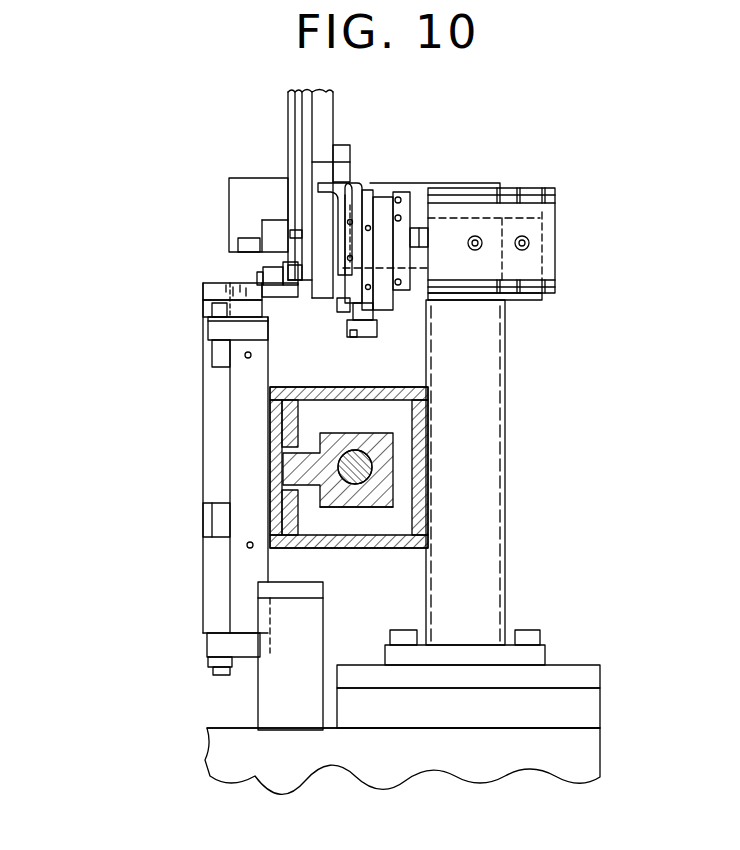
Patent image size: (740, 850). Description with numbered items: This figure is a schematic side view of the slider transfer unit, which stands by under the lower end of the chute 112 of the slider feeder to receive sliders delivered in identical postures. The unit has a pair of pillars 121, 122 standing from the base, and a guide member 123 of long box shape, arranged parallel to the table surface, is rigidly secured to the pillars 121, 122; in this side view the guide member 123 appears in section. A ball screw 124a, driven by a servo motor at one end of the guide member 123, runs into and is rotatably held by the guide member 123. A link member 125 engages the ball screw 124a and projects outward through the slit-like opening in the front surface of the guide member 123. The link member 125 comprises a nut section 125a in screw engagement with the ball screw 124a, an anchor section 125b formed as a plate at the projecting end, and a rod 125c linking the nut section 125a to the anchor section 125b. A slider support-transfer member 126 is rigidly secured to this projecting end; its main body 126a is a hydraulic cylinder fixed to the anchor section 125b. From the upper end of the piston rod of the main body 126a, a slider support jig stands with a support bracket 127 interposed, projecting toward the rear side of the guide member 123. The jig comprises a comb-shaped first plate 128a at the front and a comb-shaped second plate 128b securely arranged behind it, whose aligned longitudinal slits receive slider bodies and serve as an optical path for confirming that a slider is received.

The chute 112 is at (303, 118).
The comb-shaped second plate 128b is at (362, 180).
The comb-shaped first plate 128a is at (357, 195).
The support bracket 127 is at (213, 290).
The main body 126a is at (238, 403).
The anchor section 125b is at (275, 432).
The rod 125c is at (280, 470).
The slider support-transfer member 126 is at (181, 479).
The guide member 123 is at (338, 457).
The link member 125 is at (443, 469).
The ball screw 124a is at (372, 467).
The nut section 125a is at (390, 497).
The pillar 121 is at (539, 472).
The pillar 122 is at (477, 553).